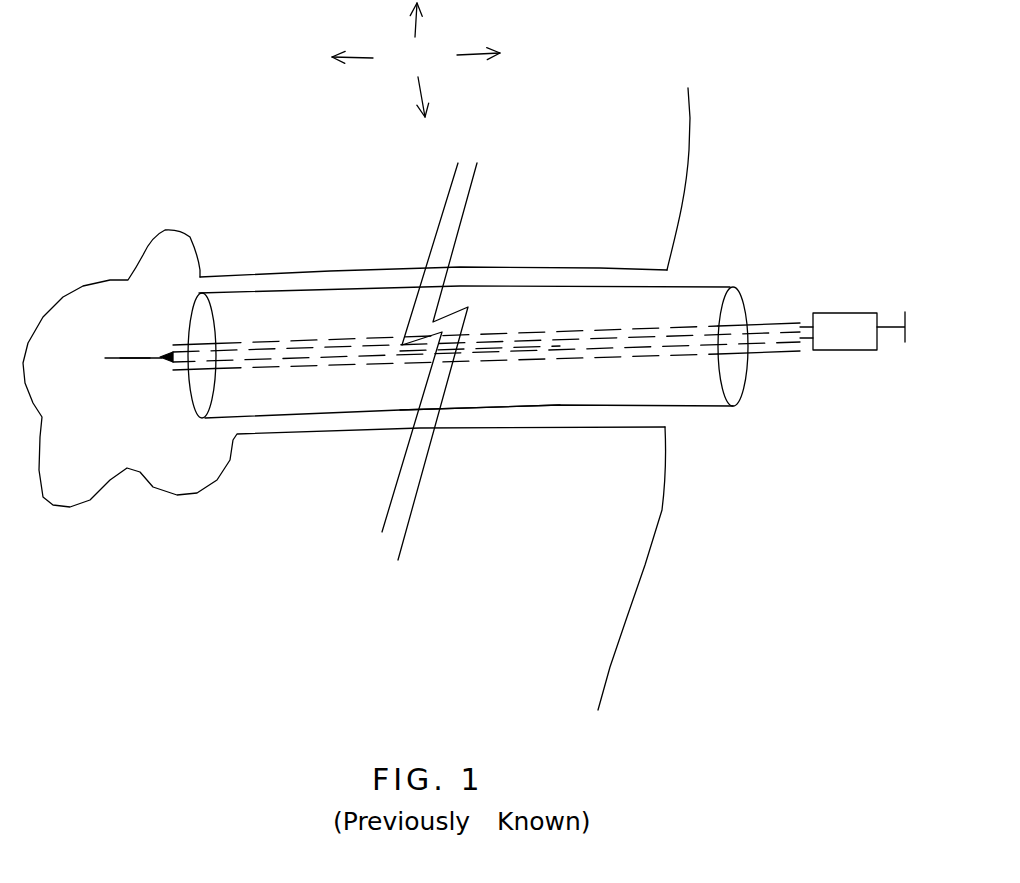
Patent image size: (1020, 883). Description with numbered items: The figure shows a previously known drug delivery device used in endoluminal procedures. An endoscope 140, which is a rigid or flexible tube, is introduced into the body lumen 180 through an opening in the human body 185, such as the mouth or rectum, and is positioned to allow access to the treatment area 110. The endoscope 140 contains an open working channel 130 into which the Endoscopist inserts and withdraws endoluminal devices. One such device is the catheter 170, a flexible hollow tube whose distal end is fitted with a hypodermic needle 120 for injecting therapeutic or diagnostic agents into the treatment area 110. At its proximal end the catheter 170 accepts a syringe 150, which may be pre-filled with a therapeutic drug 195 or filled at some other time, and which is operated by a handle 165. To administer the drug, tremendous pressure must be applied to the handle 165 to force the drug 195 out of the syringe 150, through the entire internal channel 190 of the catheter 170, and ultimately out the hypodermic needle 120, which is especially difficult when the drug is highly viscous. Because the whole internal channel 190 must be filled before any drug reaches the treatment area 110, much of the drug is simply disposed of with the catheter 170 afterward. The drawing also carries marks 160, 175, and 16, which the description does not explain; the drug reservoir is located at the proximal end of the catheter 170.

The unlabeled mark 16 is at (835, 56).
The treatment area 110 is at (90, 363).
The hypodermic needle 120 is at (132, 360).
The working channel 130 is at (308, 395).
The endoscope 140 is at (510, 407).
The syringe 150 is at (842, 363).
The housing upper wall 160 is at (690, 118).
The handle 165 is at (905, 312).
The catheter 170 is at (298, 343).
The movement directions 175 is at (416, 60).
The body lumen 180 is at (137, 257).
The human body 185 is at (665, 410).
The internal channel 190 is at (527, 347).
The therapeutic drug 195 is at (840, 328).